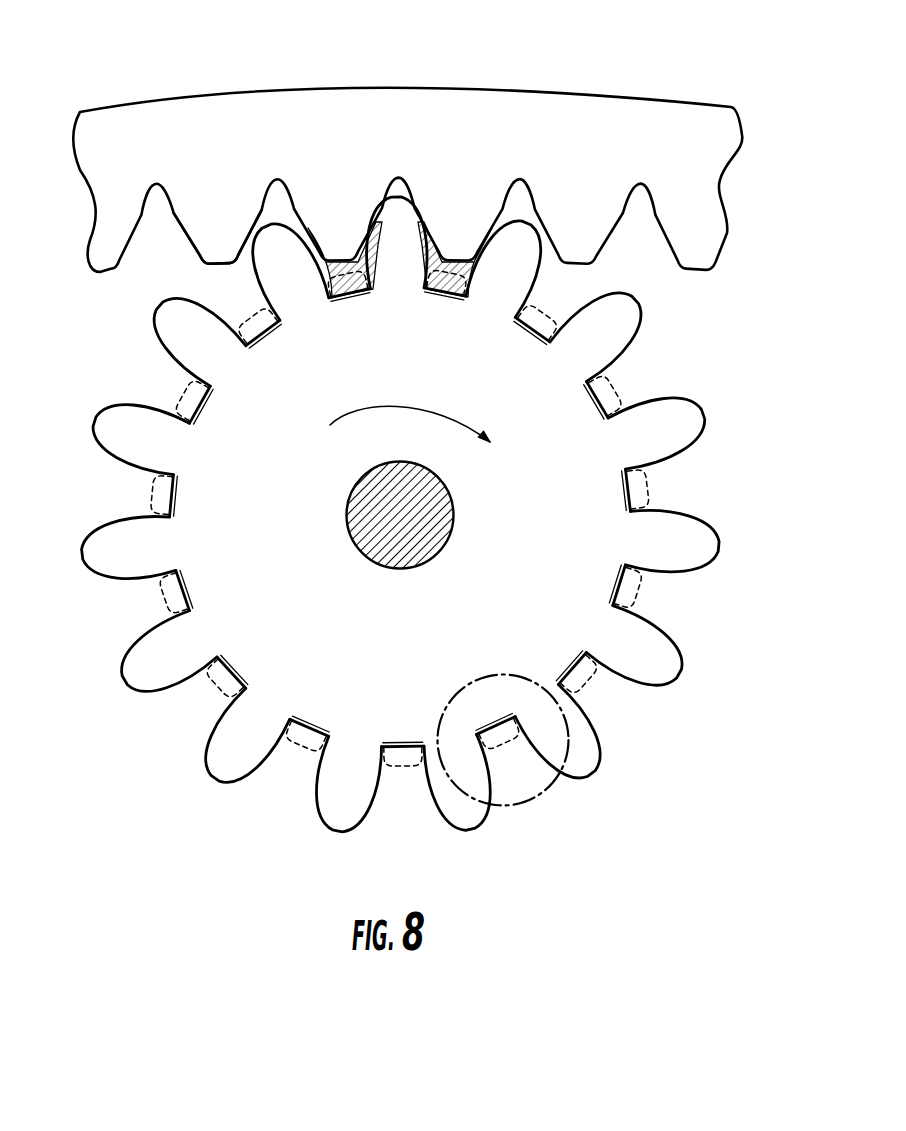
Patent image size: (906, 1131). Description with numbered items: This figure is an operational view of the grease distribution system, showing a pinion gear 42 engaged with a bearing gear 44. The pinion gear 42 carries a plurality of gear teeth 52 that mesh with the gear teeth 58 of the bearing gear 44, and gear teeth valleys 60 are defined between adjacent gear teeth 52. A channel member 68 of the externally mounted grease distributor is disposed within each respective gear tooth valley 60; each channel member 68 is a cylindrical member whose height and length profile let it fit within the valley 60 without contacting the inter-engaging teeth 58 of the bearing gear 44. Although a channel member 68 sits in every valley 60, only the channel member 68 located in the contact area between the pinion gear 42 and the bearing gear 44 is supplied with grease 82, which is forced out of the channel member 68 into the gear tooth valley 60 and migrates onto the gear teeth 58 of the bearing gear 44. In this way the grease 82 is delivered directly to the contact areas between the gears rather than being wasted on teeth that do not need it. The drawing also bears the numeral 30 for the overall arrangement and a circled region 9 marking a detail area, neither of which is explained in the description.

The gear drive assembly 30 is at (688, 62).
The bearing gear 44 is at (462, 112).
The gear teeth 58 is at (194, 233).
The pinion gear 42 is at (212, 496).
The gear teeth 52 is at (107, 408).
The gear teeth valleys 60 is at (628, 390).
The channel member 68 is at (352, 288).
The grease 82 is at (341, 258).
The detail circle for FIG. 9 is at (565, 766).